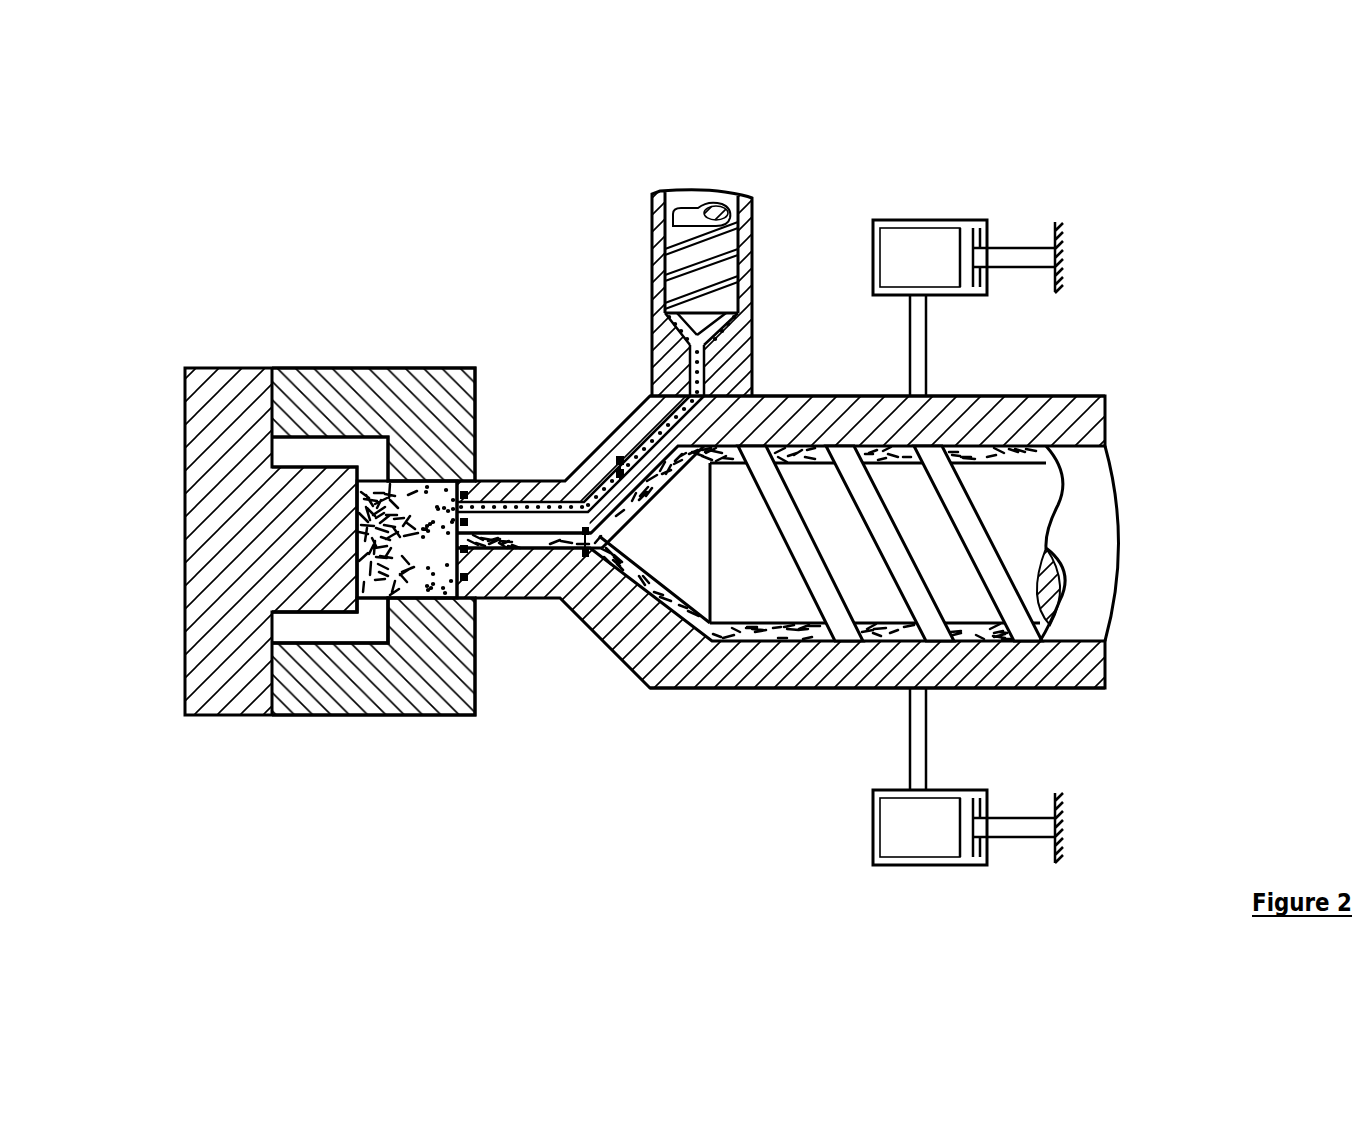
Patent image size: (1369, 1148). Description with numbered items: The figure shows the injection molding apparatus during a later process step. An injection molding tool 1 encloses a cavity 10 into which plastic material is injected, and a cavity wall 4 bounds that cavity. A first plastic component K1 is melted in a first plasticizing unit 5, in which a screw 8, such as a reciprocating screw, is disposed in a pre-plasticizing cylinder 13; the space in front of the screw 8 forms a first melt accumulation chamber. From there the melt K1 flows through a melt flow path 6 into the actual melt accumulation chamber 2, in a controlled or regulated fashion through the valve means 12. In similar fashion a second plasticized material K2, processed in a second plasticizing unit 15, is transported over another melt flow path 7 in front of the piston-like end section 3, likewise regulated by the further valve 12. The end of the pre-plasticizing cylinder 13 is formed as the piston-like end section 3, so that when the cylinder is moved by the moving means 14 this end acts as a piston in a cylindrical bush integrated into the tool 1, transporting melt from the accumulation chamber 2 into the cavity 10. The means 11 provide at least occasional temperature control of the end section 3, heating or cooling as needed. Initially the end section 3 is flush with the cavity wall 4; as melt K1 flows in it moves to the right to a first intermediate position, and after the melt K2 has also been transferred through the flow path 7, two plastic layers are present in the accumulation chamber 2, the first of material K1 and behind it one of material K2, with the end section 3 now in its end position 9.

The injection molding tool 1 is at (312, 395).
The melt accumulation chamber 2 is at (390, 450).
The piston-like end section 3 is at (440, 470).
The cavity wall 4 is at (392, 598).
The first plasticizing unit 5 is at (882, 525).
The melt flow path 6 is at (503, 550).
The melt flow path 7 is at (556, 540).
The screw 8 is at (1040, 494).
The end position 9 is at (458, 483).
The cavity 10 is at (297, 630).
The temperature control means 11 is at (468, 525).
The valve means 12 is at (625, 468).
The pre-plasticizing cylinder 13 is at (782, 410).
The moving means 14 is at (925, 250).
The second plasticizing unit 15 is at (655, 215).
The first plastic component K1 is at (440, 578).
The second plasticized material K2 is at (480, 505).